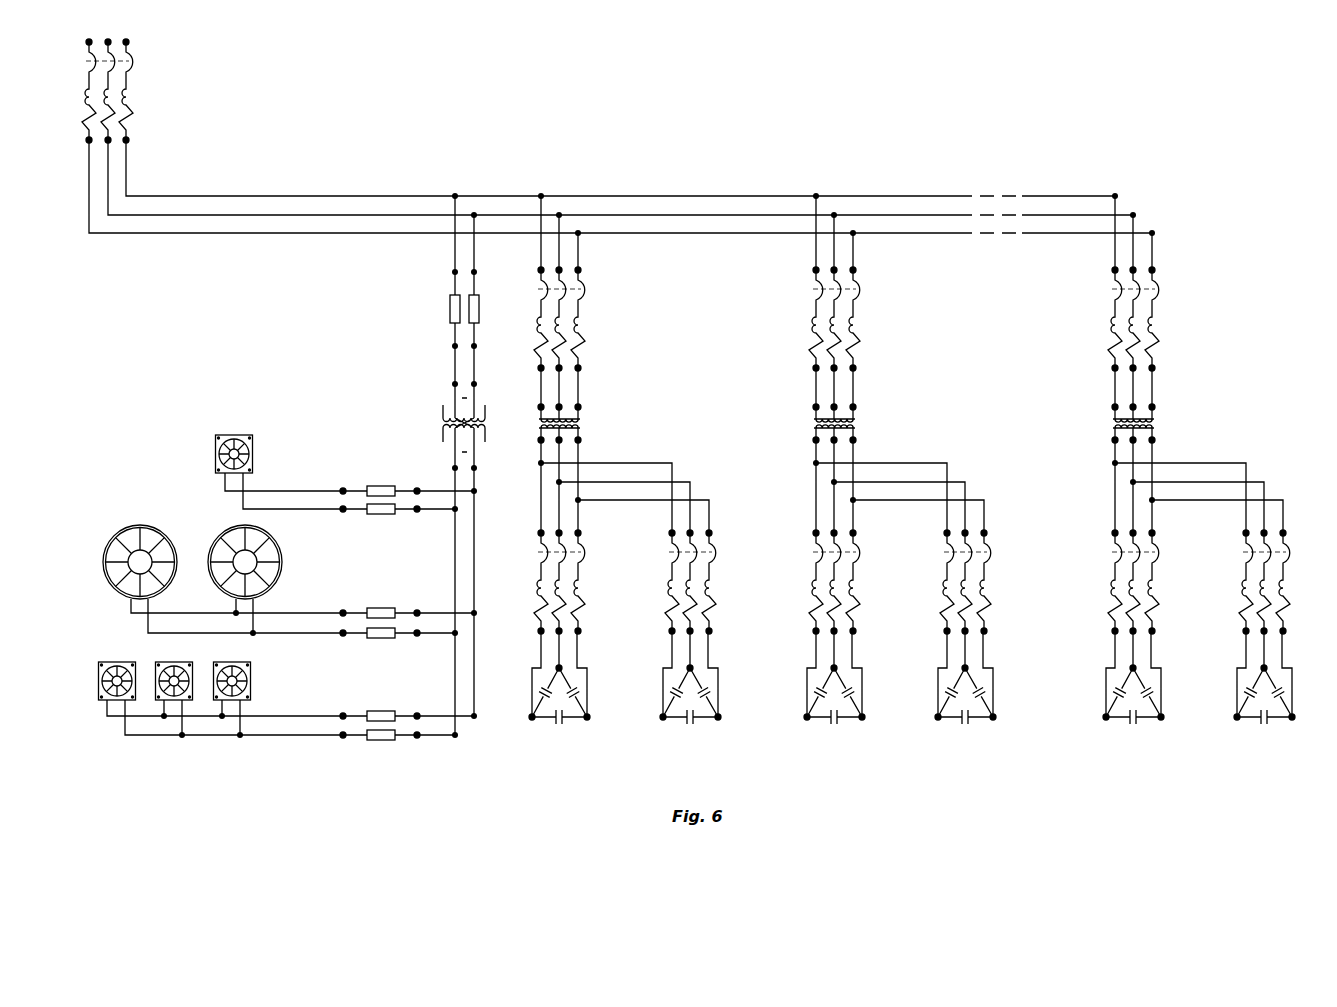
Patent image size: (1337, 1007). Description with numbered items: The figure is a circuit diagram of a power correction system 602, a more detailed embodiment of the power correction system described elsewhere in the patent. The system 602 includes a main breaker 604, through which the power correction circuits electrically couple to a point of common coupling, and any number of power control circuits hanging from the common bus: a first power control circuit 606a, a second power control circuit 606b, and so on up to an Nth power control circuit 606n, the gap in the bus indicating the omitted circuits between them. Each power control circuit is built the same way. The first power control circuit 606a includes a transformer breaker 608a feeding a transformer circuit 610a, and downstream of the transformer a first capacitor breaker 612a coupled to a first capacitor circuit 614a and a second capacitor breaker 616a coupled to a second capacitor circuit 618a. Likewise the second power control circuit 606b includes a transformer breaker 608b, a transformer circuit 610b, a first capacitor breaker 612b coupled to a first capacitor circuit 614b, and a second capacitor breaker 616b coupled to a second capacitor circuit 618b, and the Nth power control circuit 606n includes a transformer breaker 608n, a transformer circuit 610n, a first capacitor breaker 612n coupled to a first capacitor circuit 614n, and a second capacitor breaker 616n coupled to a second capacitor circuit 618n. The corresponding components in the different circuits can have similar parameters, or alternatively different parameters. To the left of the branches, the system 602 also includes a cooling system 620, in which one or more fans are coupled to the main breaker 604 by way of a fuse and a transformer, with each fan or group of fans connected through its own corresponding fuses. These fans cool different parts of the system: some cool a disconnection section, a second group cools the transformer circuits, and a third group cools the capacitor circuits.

The power correction system 602 is at (534, 66).
The main breaker 604 is at (153, 66).
The first power control circuit 606a is at (680, 350).
The second power control circuit 606b is at (955, 350).
The Nth power control circuit 606n is at (1254, 350).
The transformer breaker 608a is at (600, 292).
The transformer breaker 608b is at (875, 292).
The transformer breaker 608n is at (1174, 292).
The transformer circuit 610a is at (600, 416).
The transformer circuit 610b is at (875, 416).
The transformer circuit 610n is at (1174, 416).
The first capacitor breaker 612a is at (530, 580).
The first capacitor breaker 612b is at (805, 580).
The first capacitor breaker 612n is at (1104, 580).
The first capacitor circuit 614a is at (557, 732).
The first capacitor circuit 614b is at (832, 732).
The first capacitor circuit 614n is at (1131, 732).
The second capacitor breaker 616a is at (662, 580).
The second capacitor breaker 616b is at (937, 580).
The second capacitor breaker 616n is at (1236, 580).
The second capacitor circuit 618a is at (689, 732).
The second capacitor circuit 618b is at (964, 732).
The second capacitor circuit 618n is at (1263, 732).
The cooling system 620 is at (306, 400).